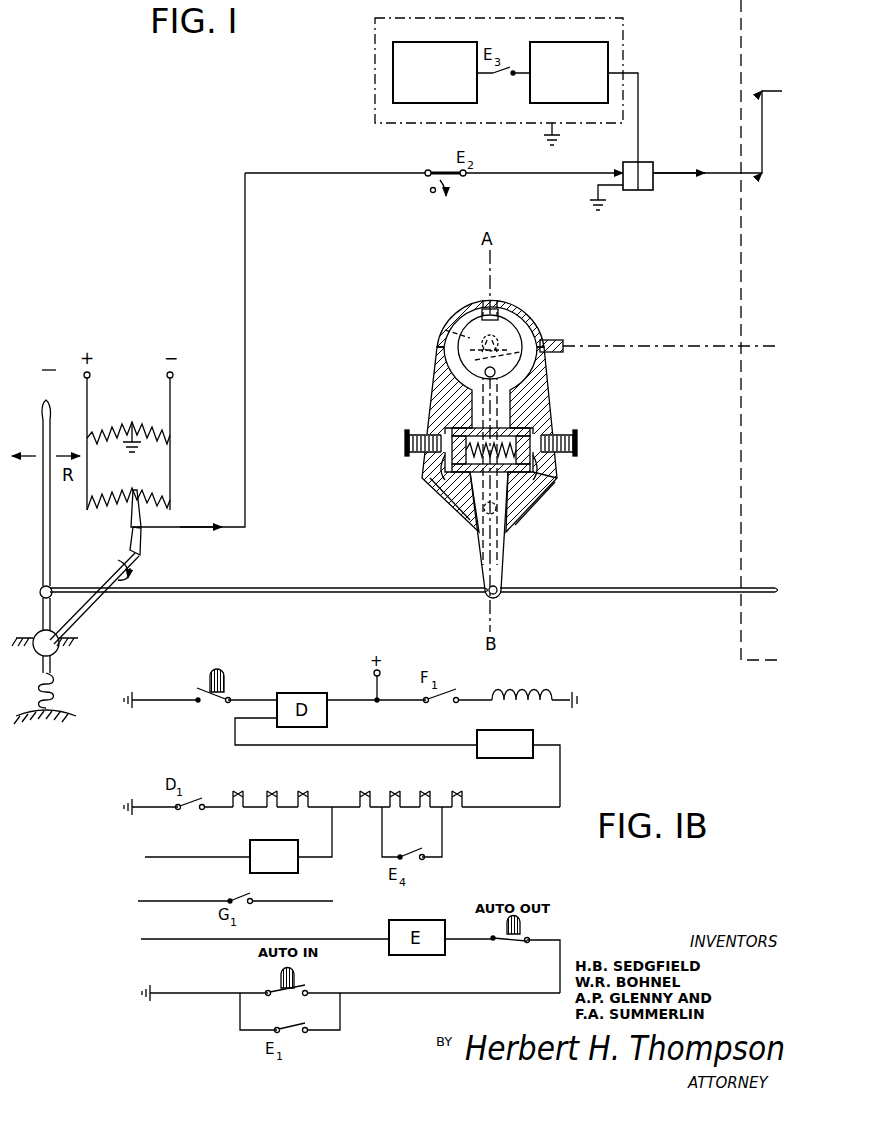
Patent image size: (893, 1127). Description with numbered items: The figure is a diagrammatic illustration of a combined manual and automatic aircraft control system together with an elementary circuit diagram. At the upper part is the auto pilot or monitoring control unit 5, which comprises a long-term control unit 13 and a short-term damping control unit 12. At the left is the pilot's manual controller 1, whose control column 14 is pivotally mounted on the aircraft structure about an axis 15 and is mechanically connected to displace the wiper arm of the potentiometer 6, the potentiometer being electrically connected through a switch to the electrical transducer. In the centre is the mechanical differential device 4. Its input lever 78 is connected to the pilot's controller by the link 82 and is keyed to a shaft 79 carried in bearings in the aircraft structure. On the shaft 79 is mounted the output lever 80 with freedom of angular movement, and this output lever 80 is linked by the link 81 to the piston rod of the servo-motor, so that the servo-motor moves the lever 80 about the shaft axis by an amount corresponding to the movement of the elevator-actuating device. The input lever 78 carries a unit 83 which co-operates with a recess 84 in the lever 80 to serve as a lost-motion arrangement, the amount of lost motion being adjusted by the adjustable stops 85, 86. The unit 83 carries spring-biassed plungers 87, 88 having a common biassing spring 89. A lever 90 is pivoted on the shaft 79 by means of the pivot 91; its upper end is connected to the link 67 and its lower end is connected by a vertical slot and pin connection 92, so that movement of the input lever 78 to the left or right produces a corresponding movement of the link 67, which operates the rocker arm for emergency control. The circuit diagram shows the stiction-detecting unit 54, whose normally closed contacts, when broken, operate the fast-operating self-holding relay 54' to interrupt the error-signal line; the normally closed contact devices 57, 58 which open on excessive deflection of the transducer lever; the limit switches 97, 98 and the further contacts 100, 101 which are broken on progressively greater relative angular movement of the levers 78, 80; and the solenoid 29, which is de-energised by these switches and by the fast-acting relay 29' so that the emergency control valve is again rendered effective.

In FIG. 1, the pilot's manual controller 1 is at (49, 361).
In FIG. 1, the auto pilot control unit 5 is at (508, 20).
In FIG. 1, the long-term control unit 13 is at (393, 65).
In FIG. 1, the short-term damping control unit 12 is at (608, 66).
In FIG. 1, the pilot's control column 14 is at (51, 426).
In FIG. 1, the axis / wiper arm 15 is at (140, 548).
In FIG. 1, the potentiometer 6 is at (133, 492).
In FIG. 1, the link 82 is at (333, 588).
In FIG. 1, the link 81 is at (711, 585).
In FIG. 1, the recess 84 is at (548, 422).
In FIG. 1, the adjustable stop 86 is at (409, 437).
In FIG. 1, the adjustable stop 85 is at (577, 443).
In FIG. 1, the output lever 80 is at (545, 478).
In FIG. 1, the spring-biassed plunger 87 is at (557, 472).
In FIG. 1, the spring-biassed plunger 88 is at (428, 475).
In FIG. 1, the unit 83 is at (446, 498).
In FIG. 1, the common biassing spring 89 is at (522, 520).
In FIG. 1, the mechanical differential device 4 is at (540, 498).
In FIG. 1, the input lever 78 is at (478, 555).
In FIG. 1, the vertical slot and pin connection 92 is at (484, 511).
In FIG. 1, the shaft 79 is at (470, 361).
In FIG. 1, the lever 90 is at (445, 330).
In FIG. 1, the pivot 91 is at (540, 362).
In FIG. 1, the link 67 is at (618, 346).
In FIG. 1B, the solenoid 29 is at (526, 688).
In FIG. 1B, the fast-acting relay 29' is at (523, 762).
In FIG. 1B, the contact device 57 is at (239, 786).
In FIG. 1B, the stiction-detecting unit 54 is at (273, 786).
In FIG. 1B, the contact device 58 is at (304, 786).
In FIG. 1B, the contact 100 is at (364, 786).
In FIG. 1B, the limit switch 97 is at (396, 786).
In FIG. 1B, the limit switch 98 is at (426, 786).
In FIG. 1B, the contact 101 is at (463, 786).
In FIG. 1B, the fast-operating self-holding relay 54' is at (229, 840).